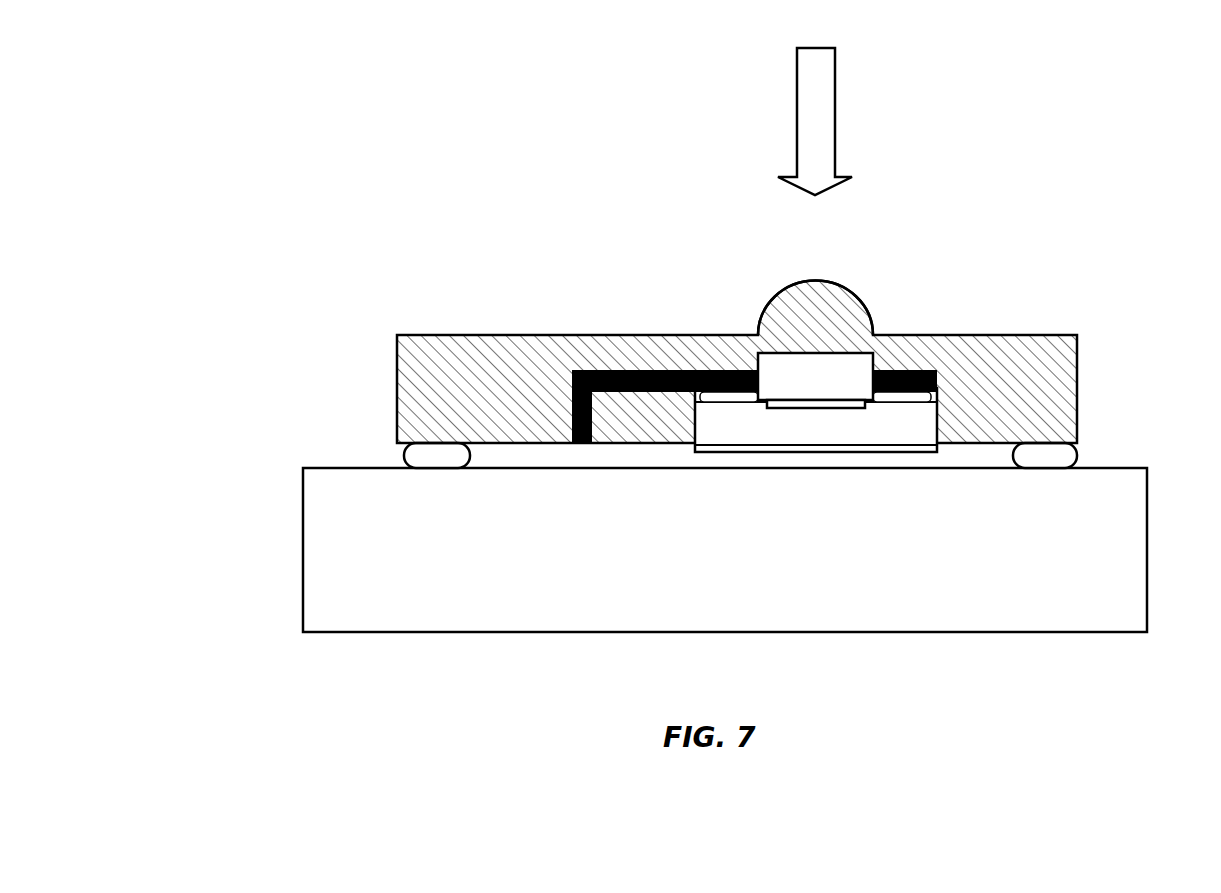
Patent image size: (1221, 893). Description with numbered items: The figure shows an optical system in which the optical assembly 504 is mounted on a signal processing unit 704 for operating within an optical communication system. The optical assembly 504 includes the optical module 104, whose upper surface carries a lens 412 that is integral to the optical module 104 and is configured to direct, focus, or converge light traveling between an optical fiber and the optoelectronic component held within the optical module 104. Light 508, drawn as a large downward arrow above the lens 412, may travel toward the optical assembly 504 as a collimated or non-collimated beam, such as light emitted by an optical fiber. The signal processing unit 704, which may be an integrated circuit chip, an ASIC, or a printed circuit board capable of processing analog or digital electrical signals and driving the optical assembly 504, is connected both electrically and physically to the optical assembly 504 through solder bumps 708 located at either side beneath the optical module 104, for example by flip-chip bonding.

The optical module 104 is at (397, 393).
The lens 412 is at (813, 287).
The optical assembly 504 is at (1087, 357).
The light 508 is at (835, 105).
The signal processing unit 704 is at (303, 551).
The solder bumps 708 is at (406, 458).